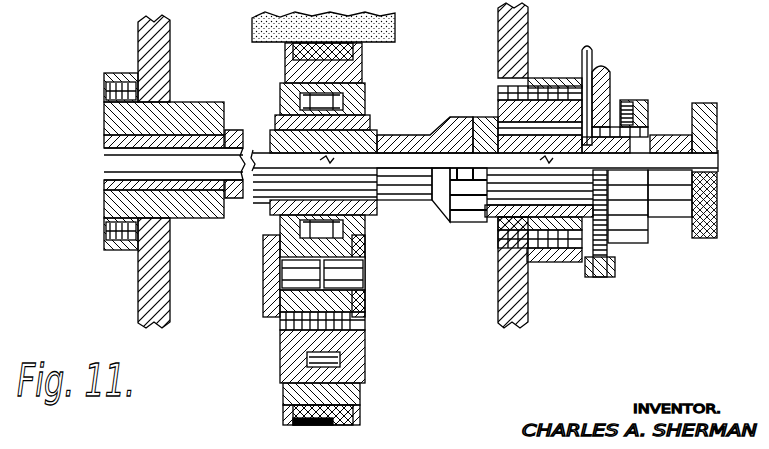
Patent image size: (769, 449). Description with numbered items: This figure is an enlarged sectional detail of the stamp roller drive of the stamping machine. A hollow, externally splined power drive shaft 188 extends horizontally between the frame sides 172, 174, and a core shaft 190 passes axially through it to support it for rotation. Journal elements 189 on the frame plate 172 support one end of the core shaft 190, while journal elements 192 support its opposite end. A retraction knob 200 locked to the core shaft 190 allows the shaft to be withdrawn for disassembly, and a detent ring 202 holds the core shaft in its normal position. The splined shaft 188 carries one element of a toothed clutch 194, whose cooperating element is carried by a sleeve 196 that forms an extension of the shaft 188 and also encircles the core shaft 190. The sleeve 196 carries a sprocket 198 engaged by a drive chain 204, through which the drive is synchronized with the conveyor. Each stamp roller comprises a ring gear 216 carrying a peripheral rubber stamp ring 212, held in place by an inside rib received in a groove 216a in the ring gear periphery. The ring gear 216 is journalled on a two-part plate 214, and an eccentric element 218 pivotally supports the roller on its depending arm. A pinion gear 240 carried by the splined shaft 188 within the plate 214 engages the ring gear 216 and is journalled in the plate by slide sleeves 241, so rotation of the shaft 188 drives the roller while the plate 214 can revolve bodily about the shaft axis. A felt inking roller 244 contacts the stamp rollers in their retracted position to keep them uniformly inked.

The frame side 172 is at (150, 37).
The frame side 174 is at (530, 25).
The power drive shaft 188 is at (408, 205).
The journal elements 189 is at (104, 135).
The core shaft 190 is at (104, 165).
The journal elements 192 is at (477, 117).
The toothed clutch 194 is at (462, 224).
The sleeve 196 is at (586, 65).
The sprocket 198 is at (610, 80).
The retraction knob 200 is at (705, 103).
The detent ring 202 is at (104, 153).
The drive chain 204 is at (615, 272).
The stamp ring 212 is at (278, 55).
The plate 214 is at (366, 346).
The ring gear 216 is at (362, 70).
The groove 216a is at (292, 422).
The eccentric element 218 is at (263, 270).
The pinion gear 240 is at (343, 108).
The slide sleeves 241 is at (372, 118).
The felt roller 244 is at (395, 27).